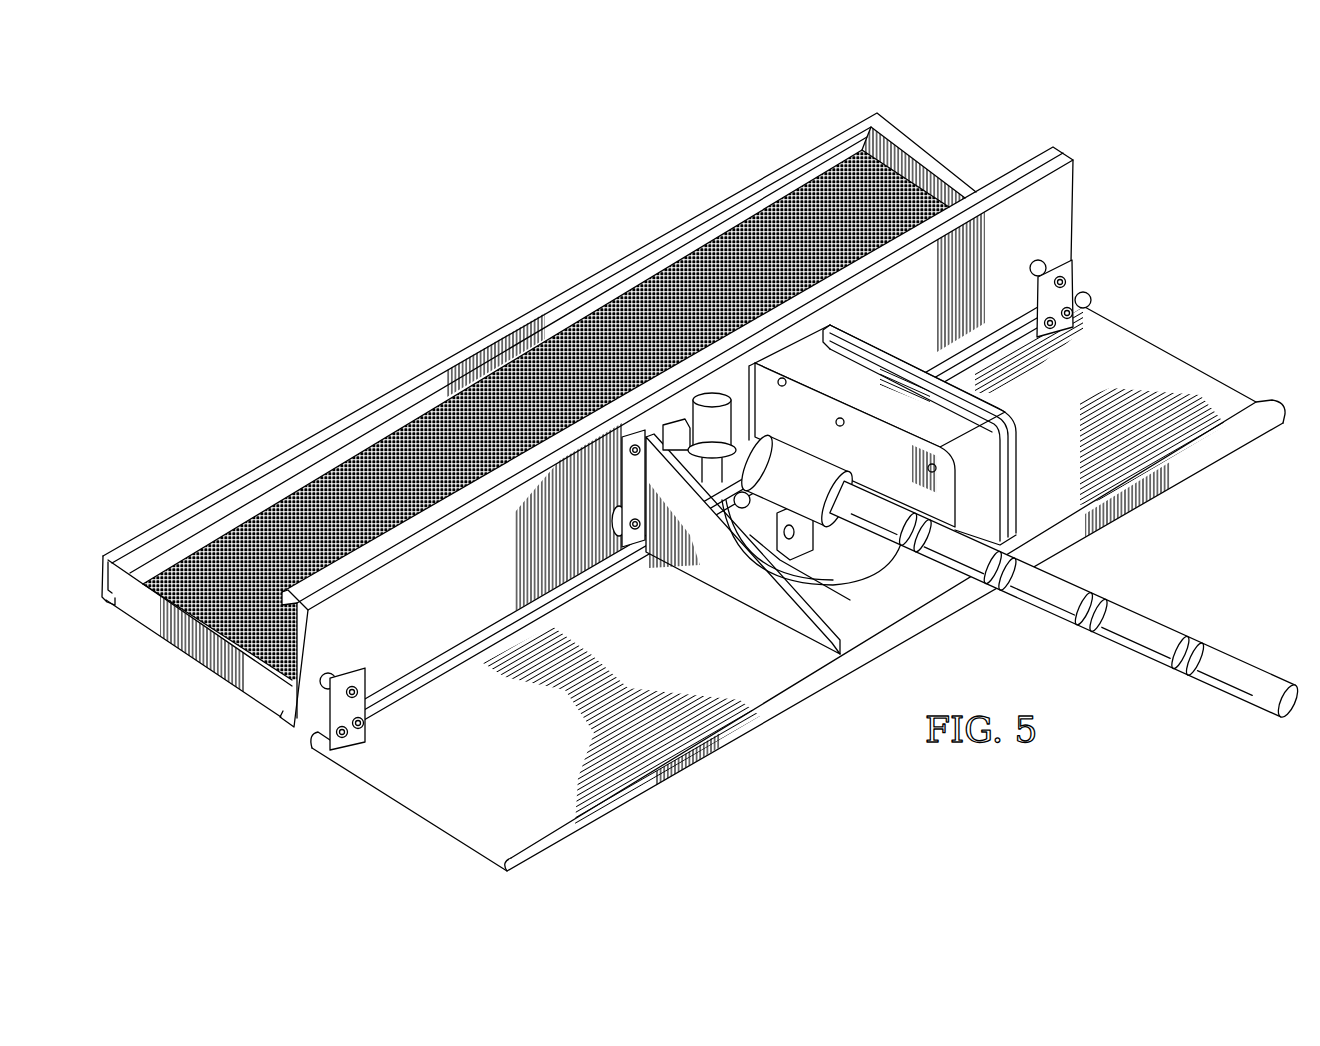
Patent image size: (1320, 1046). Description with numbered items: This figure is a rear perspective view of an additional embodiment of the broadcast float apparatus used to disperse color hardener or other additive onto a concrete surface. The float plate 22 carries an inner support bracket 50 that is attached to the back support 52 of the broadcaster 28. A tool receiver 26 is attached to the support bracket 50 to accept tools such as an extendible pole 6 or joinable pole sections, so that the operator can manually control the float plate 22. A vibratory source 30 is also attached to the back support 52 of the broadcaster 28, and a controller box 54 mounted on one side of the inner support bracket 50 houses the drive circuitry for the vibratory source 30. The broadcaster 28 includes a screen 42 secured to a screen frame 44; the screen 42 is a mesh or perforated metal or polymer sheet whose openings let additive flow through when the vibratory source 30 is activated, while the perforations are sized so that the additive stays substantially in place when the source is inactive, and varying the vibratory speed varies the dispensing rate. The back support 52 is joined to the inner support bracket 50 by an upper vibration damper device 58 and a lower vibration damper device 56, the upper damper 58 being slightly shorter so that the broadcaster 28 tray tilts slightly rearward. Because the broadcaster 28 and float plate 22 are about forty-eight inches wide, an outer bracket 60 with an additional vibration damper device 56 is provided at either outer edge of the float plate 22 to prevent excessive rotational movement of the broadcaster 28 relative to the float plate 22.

The extendible pole 6 is at (1133, 606).
The float plate 22 is at (407, 798).
The tool receiver 26 is at (812, 466).
The broadcaster 28 is at (962, 128).
The vibratory source 30 is at (737, 432).
The screen 42 is at (684, 272).
The screen frame 44 is at (491, 336).
The inner support bracket 50 is at (757, 600).
The back support 52 is at (410, 655).
The controller box 54 is at (983, 452).
The lower vibration damper device 56 is at (329, 669).
The upper vibration damper device 58 is at (626, 443).
The outer bracket 60 is at (360, 710).